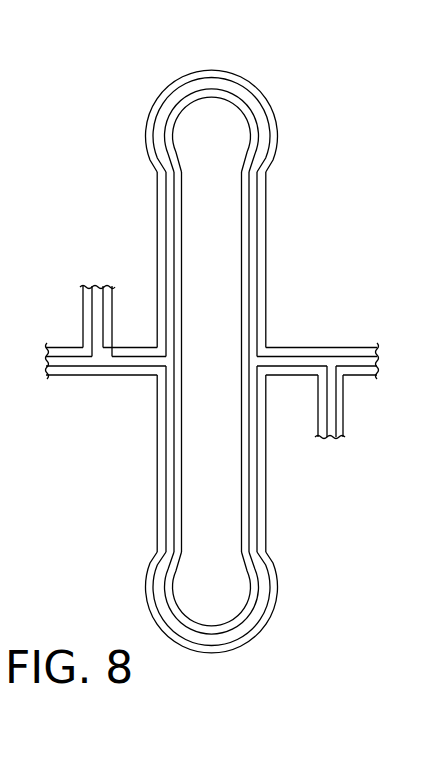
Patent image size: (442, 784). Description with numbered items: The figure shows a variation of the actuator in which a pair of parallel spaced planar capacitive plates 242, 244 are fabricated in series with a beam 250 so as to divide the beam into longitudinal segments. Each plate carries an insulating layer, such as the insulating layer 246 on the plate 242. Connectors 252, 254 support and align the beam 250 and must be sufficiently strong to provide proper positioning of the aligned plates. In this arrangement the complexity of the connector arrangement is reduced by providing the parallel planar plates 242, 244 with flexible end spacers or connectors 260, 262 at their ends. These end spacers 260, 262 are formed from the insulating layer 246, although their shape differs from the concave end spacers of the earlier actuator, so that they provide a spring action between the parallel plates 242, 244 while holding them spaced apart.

The flexible end spacer 260 is at (264, 80).
The flexible end spacer 262 is at (333, 547).
The planar capacitive plate 242 is at (169, 236).
The planar capacitive plate 244 is at (255, 235).
The insulating layer 246 is at (181, 249).
The beam 250 is at (103, 361).
The connector 252 is at (95, 320).
The connector 254 is at (328, 411).